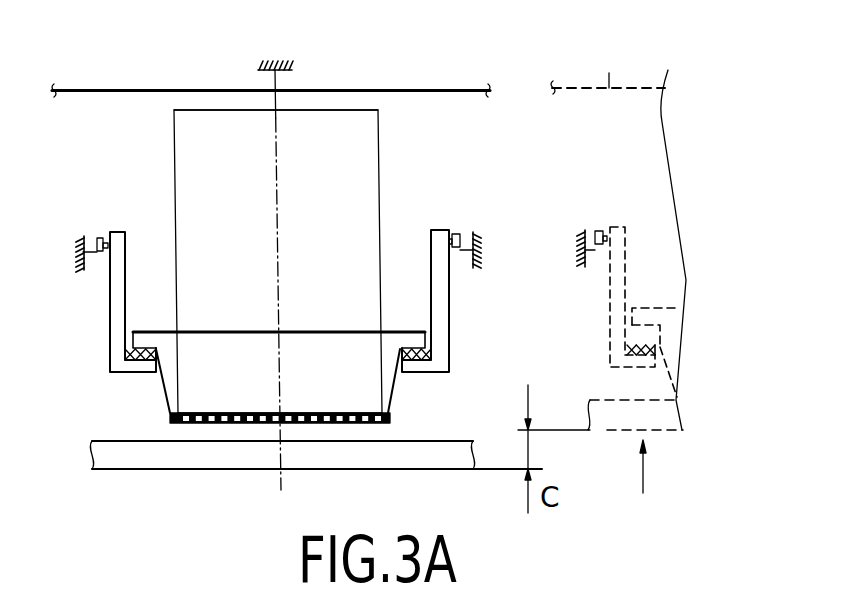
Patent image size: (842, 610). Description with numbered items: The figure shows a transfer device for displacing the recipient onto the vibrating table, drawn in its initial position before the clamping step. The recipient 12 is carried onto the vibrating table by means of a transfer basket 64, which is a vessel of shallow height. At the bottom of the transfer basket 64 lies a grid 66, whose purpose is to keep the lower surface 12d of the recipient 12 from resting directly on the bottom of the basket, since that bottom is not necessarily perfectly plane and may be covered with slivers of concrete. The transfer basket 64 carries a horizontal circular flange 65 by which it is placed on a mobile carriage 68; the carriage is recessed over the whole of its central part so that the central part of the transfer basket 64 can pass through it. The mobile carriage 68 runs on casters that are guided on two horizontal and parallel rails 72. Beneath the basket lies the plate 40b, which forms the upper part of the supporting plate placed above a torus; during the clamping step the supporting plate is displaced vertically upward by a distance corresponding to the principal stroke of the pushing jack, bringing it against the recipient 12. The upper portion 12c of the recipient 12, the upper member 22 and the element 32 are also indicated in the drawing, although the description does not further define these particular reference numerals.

The recipient 12 is at (356, 148).
The upper wall of housing 12c is at (197, 110).
The lower surface of the recipient 12d is at (338, 410).
The support frame 22 is at (398, 90).
The mounting plate 32 is at (102, 95).
The transfer basket 64 is at (150, 330).
The horizontal circular flange 65 is at (405, 333).
The grid 66 is at (170, 415).
The mobile carriage 68 is at (620, 322).
The horizontal and parallel rails 72 is at (592, 233).
The plate 40b is at (163, 458).